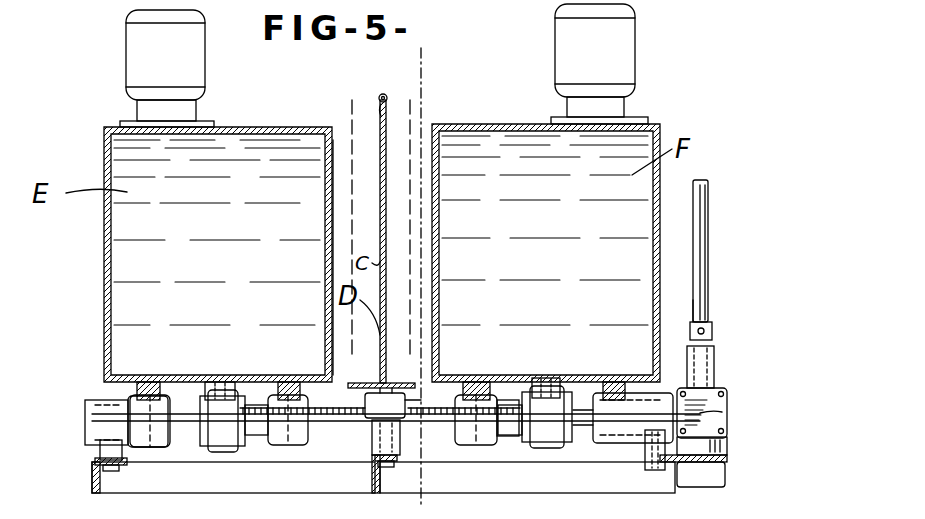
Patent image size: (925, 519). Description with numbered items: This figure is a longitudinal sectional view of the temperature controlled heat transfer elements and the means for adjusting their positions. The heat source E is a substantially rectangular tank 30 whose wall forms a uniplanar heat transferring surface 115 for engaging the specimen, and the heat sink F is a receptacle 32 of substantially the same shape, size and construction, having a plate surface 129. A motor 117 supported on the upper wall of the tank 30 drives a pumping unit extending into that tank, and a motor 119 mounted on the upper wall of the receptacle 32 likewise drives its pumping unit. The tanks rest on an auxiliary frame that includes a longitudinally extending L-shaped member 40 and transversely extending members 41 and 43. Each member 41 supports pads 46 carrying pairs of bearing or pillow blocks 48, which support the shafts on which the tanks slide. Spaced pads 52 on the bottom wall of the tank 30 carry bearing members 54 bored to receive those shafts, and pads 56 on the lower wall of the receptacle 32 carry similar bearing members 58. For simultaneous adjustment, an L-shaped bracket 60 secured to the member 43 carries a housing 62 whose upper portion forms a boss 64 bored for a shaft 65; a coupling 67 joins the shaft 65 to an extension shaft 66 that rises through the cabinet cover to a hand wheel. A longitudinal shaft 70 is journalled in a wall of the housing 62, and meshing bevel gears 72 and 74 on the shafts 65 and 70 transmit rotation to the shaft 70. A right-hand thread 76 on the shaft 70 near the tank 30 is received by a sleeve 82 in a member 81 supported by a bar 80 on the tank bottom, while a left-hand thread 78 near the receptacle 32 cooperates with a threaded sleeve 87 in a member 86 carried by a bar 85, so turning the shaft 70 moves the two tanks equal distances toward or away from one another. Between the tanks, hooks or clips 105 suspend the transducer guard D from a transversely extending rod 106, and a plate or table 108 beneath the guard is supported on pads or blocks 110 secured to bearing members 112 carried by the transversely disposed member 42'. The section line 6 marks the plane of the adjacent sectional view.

The section line 6- 6 is at (430, 74).
The motor 117 is at (200, 72).
The motor 119 is at (630, 28).
The tank 30 is at (287, 113).
The receptacle 32 is at (497, 124).
The plate surface 129 is at (432, 218).
The hooks or clips 105 is at (378, 100).
The transversely extending rod 106 is at (383, 94).
The heat transferring surface 115 is at (333, 232).
The plate or table 108 is at (382, 383).
The bearing members 112 is at (365, 398).
The pads or blocks 110 is at (410, 398).
The right-hand thread 76 is at (320, 425).
The bearing or pillow blocks 48 is at (90, 400).
The pads 46 is at (100, 453).
The transversely extending members 41 is at (92, 480).
The longitudinally extending L-shaped member 40 is at (573, 498).
The transversely disposed member 42' is at (395, 485).
The pads 52 is at (140, 382).
The bearing members 54 is at (150, 440).
The bar 80 is at (215, 382).
The member 81 is at (220, 445).
The sleeve 82 is at (258, 440).
The pads 56 is at (476, 382).
The bearing members 58 is at (470, 430).
The bar 85 is at (540, 378).
The member 86 is at (538, 445).
The threaded sleeve 87 is at (512, 440).
The left-hand thread 78 is at (497, 440).
The shaft 70 is at (620, 430).
The housing 62 is at (738, 372).
The bevel gear 72 is at (722, 412).
The L-shaped bracket 60 is at (727, 446).
The transversely extending member 43 is at (727, 470).
The bevel gear 74 is at (701, 476).
The extension shaft 66 is at (708, 195).
The coupling 67 is at (693, 322).
The shaft 65 is at (720, 335).
The boss 64 is at (722, 355).